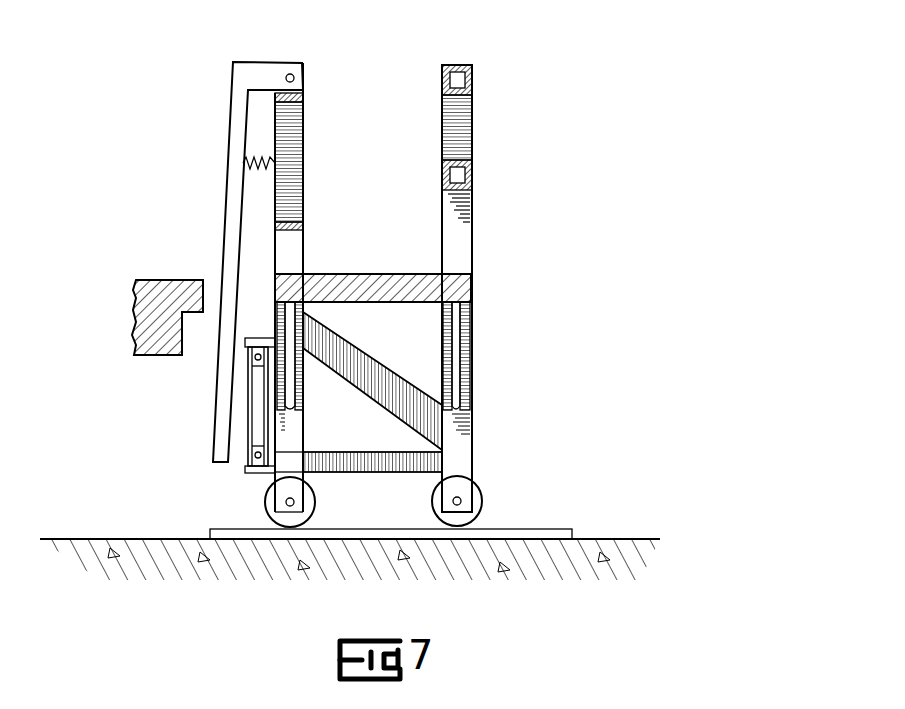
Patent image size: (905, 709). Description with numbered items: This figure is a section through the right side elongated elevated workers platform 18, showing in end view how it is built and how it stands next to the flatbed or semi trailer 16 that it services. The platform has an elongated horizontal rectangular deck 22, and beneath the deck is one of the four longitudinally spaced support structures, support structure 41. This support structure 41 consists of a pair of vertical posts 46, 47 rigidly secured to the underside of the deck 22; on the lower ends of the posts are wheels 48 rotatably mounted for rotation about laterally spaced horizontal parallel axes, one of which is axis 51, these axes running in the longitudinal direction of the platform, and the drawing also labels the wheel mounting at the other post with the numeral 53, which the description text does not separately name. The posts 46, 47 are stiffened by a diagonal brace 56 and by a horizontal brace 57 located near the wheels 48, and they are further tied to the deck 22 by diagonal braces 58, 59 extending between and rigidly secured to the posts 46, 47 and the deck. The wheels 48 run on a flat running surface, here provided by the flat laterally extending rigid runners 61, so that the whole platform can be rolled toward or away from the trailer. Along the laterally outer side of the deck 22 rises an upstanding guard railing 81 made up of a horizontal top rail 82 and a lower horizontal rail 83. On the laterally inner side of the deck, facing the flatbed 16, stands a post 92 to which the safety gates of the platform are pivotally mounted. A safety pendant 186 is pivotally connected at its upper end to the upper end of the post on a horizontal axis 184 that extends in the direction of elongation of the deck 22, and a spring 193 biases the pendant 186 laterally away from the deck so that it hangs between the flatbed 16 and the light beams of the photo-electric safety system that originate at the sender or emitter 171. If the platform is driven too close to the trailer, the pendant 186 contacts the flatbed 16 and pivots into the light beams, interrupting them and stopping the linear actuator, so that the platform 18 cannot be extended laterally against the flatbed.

The flatbed or semi trailer 16 is at (185, 282).
The right side elongated elevated workers platform 18 is at (473, 274).
The deck 22 is at (380, 274).
The support structure 41 is at (472, 420).
The vertical post 46 is at (304, 308).
The vertical post 47 is at (472, 336).
The wheels 48 is at (316, 488).
The horizontal axis 51 is at (284, 502).
The right wheel axle 53 is at (461, 498).
The diagonal brace 56 is at (380, 376).
The horizontal brace 57 is at (395, 452).
The diagonal brace 58 is at (304, 398).
The diagonal brace 59 is at (457, 350).
The rigid runners 61 is at (528, 529).
The guard railing 81 is at (470, 70).
The horizontal top rail 82 is at (468, 96).
The lower horizontal rail 83 is at (468, 176).
The post 92 is at (304, 243).
The sender or emitter 171 is at (248, 392).
The horizontal axis 184 is at (298, 82).
The safety pendant 186 is at (233, 105).
The spring 193 is at (258, 172).